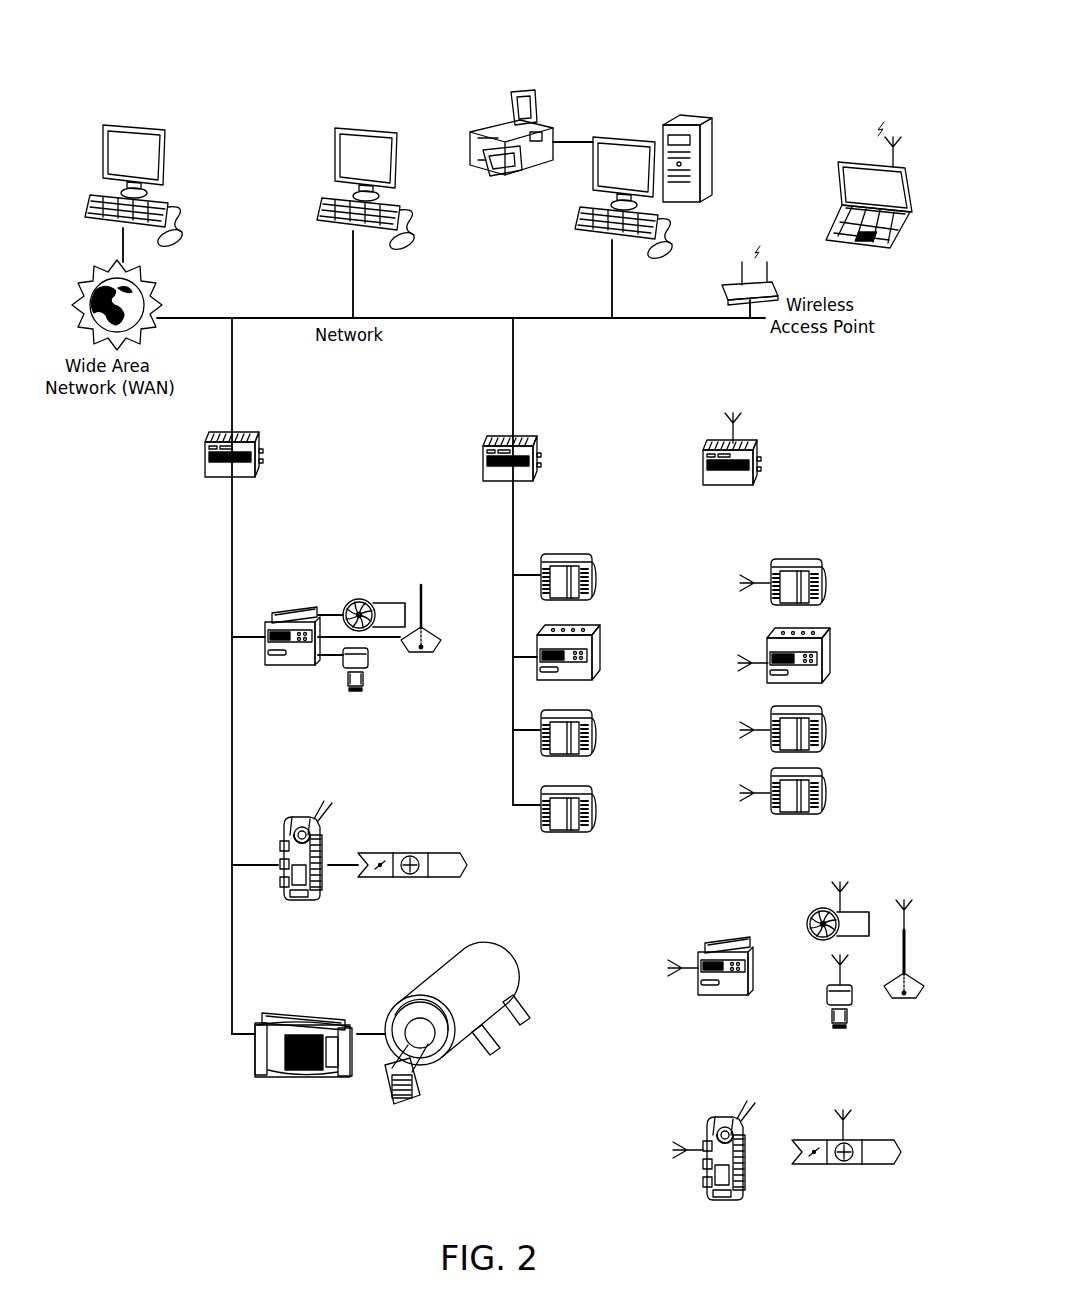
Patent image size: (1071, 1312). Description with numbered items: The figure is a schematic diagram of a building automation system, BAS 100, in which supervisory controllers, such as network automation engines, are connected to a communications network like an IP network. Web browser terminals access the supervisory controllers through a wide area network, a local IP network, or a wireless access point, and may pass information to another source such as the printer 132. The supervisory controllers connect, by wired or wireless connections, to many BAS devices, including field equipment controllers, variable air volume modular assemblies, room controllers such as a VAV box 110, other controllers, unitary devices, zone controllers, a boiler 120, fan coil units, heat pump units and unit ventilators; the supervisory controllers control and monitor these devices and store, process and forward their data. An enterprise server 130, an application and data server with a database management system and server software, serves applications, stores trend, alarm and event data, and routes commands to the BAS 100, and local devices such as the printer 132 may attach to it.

The BAS 100 is at (752, 68).
The room controller 110 is at (438, 858).
The boiler 120 is at (490, 962).
The enterprise server 130 is at (615, 150).
The printer 132 is at (500, 120).